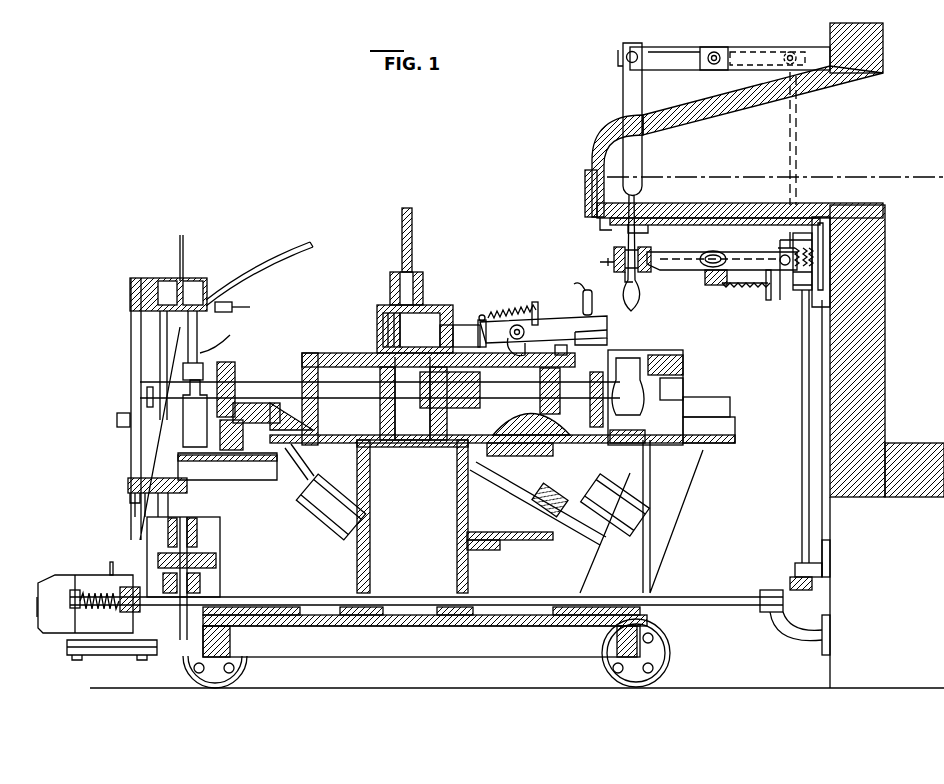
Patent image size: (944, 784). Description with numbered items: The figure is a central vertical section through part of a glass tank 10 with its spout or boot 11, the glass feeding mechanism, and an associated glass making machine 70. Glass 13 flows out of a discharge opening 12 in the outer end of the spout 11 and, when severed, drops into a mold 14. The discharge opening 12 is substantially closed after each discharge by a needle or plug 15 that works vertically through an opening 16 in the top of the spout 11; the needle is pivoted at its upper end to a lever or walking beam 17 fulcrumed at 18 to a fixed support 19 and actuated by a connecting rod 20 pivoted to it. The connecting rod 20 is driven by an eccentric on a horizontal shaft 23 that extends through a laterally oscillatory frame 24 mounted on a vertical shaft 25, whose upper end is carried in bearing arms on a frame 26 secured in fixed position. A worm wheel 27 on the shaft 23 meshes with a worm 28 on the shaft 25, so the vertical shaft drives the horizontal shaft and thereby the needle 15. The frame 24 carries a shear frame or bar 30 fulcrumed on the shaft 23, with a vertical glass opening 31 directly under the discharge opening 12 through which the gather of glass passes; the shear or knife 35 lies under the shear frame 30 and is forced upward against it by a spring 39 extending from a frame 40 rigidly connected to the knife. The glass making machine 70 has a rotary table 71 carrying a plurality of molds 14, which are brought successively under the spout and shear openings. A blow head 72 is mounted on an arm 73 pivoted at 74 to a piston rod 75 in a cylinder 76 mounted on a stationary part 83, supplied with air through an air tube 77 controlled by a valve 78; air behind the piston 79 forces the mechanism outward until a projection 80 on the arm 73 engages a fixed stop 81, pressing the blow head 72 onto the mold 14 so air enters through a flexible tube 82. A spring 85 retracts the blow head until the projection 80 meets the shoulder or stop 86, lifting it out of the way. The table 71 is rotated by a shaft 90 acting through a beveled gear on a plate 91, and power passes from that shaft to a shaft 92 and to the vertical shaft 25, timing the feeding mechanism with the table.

The glass tank 10 is at (877, 352).
The spout or boot 11 is at (727, 108).
The discharge opening 12 is at (645, 215).
The glass 13 is at (616, 236).
The mold 14 is at (648, 368).
The needle or plug 15 is at (624, 85).
The opening 16 is at (644, 118).
The lever or walking beam 17 is at (657, 50).
The fulcrum 18 is at (715, 51).
The fixed support 19 is at (790, 50).
The connecting rod 20 is at (798, 127).
The shaft 23 is at (788, 256).
The frame 24 is at (784, 282).
The vertical shaft 25 is at (801, 380).
The frame 26 is at (781, 256).
The worm wheel 27 is at (813, 258).
The worm 28 is at (829, 271).
The shear frame or bar 30 is at (691, 266).
The glass opening 31 is at (606, 265).
The shear or knife 35 is at (670, 270).
The spring 39 is at (750, 290).
The frame 40 is at (767, 300).
The glass making machine 70 is at (410, 627).
The rotary table 71 is at (556, 441).
The blow head 72 is at (603, 330).
The arm 73 is at (550, 320).
The pivot 74 is at (510, 326).
The piston rod 75 is at (461, 324).
The cylinder 76 is at (437, 305).
The air tube 77 is at (401, 231).
The valve 78 is at (389, 290).
The piston 79 is at (383, 328).
The projection 80 is at (524, 348).
The fixed stop 81 is at (568, 352).
The flexible tube 82 is at (580, 296).
The stationary part 83 is at (318, 353).
The spring 85 is at (520, 300).
The shoulder or stop 86 is at (497, 316).
The shaft 90 is at (236, 612).
The plate 91 is at (267, 560).
The shaft 92 is at (527, 597).